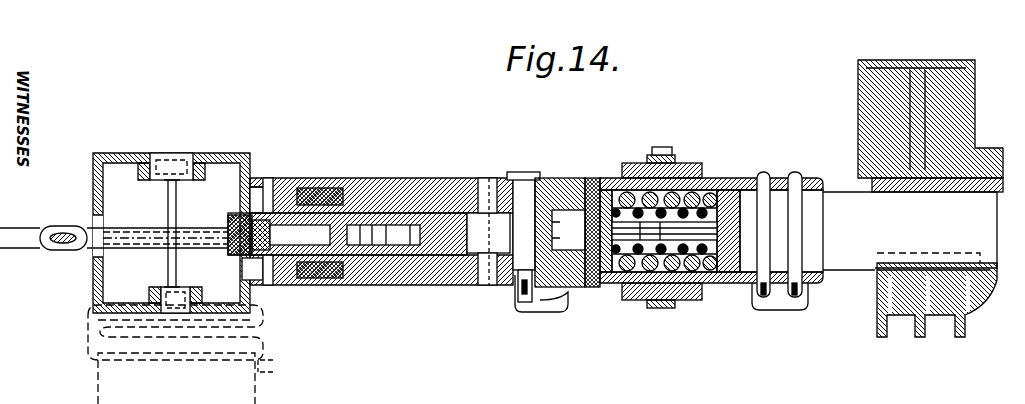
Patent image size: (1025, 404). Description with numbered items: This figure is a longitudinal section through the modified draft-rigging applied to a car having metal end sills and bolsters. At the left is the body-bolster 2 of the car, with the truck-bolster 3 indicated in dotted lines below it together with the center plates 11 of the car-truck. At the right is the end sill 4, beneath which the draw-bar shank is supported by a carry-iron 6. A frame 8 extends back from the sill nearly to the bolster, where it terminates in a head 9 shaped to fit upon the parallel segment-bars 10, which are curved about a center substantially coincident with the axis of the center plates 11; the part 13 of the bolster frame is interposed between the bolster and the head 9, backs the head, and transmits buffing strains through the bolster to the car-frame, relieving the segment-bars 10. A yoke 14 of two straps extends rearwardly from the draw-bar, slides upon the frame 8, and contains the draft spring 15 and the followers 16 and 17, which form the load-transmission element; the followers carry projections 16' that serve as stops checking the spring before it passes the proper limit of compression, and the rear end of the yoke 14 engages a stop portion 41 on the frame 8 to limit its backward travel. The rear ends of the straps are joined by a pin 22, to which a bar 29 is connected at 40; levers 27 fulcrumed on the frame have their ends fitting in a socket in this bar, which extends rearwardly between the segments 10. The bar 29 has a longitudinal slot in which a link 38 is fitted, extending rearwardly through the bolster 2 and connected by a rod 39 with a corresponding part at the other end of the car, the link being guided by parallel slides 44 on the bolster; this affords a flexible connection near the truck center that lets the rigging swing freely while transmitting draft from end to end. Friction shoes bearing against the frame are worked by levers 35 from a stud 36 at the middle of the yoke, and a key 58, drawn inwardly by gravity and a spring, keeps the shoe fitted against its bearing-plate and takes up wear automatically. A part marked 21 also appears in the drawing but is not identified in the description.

The body-bolster 2 is at (171, 233).
The truck-bolster 3 is at (187, 378).
The end sill 4 is at (858, 120).
The carry-iron 6 is at (880, 300).
The frame 8 is at (430, 178).
The head 9 is at (270, 180).
The segment-bars 10 is at (322, 189).
The center plates 11 is at (175, 332).
The part of frame 13 is at (262, 200).
The yoke 14 is at (570, 186).
The draft spring 15 is at (664, 231).
The follower 16 is at (597, 248).
The projections 16' is at (681, 263).
The follower 17 is at (771, 172).
The flange 21 is at (910, 186).
The pin 22 is at (522, 178).
The levers 27 is at (383, 235).
The bar 29 is at (347, 234).
The levers 35 is at (637, 168).
The stud 36 is at (678, 160).
The link 38 is at (147, 242).
The rod 39 is at (6, 250).
The connection 40 is at (488, 233).
The stop portion 41 is at (485, 178).
The slides 44 is at (212, 244).
The key 58 is at (660, 147).